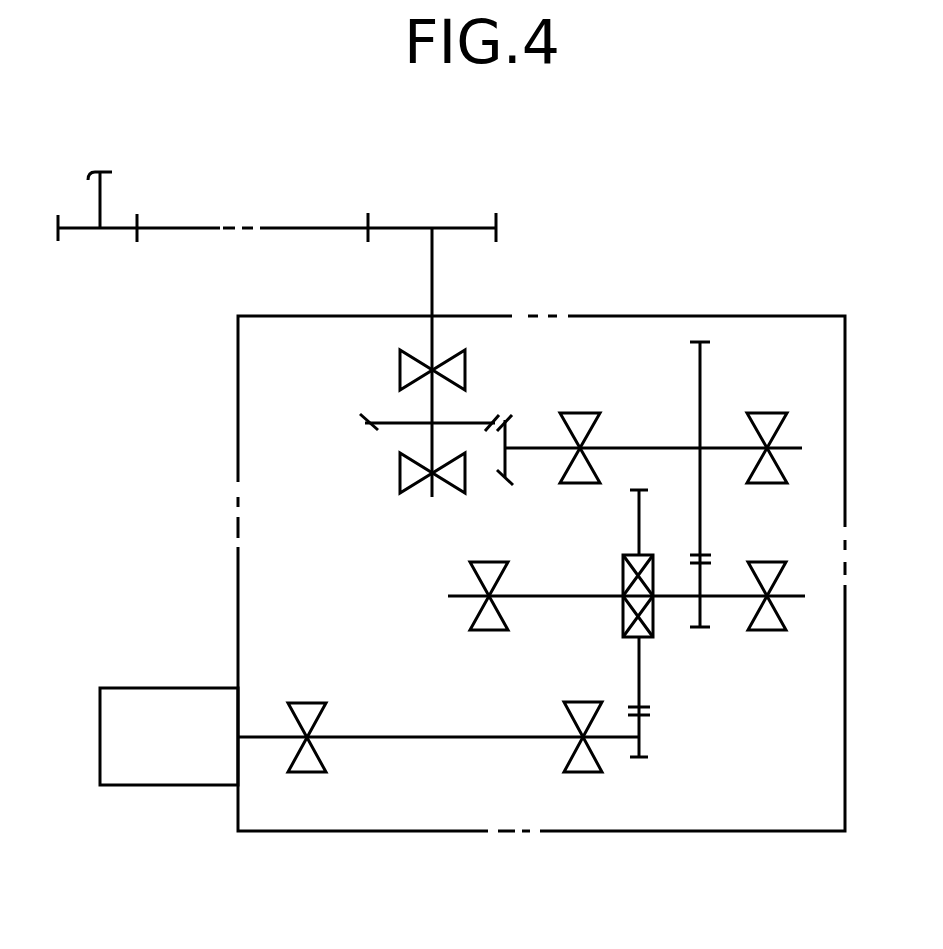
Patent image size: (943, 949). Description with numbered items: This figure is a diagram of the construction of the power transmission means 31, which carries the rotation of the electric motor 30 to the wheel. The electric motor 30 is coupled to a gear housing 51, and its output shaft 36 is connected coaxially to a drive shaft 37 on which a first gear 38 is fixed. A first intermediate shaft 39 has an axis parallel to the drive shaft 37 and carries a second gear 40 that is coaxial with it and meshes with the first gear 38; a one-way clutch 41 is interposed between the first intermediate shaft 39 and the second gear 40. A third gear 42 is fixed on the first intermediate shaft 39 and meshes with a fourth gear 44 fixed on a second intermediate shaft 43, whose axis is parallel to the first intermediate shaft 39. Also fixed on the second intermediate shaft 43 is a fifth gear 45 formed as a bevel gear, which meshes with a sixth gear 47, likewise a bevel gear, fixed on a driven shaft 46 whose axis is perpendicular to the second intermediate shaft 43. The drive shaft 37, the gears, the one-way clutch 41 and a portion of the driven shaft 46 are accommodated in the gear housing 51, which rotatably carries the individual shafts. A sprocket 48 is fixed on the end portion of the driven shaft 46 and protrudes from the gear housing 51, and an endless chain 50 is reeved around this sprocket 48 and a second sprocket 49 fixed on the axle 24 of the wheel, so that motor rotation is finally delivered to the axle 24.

The axle 24 is at (102, 205).
The electric motor 30 is at (160, 756).
The power transmission means 31 is at (487, 208).
The output shaft 36 is at (272, 736).
The drive shaft 37 is at (467, 740).
The first gear 38 is at (643, 743).
The first intermediate shaft 39 is at (537, 595).
The second gear 40 is at (642, 683).
The one-way clutch 41 is at (622, 617).
The third gear 42 is at (703, 630).
The second intermediate shaft 43 is at (718, 447).
The fourth gear 44 is at (703, 530).
The fifth gear 45 is at (505, 435).
The driven shaft 46 is at (432, 297).
The sixth gear 47 is at (377, 428).
The sprocket 48 is at (496, 215).
The sprocket 49 is at (58, 240).
The endless chain 50 is at (308, 228).
The gear housing 51 is at (772, 316).